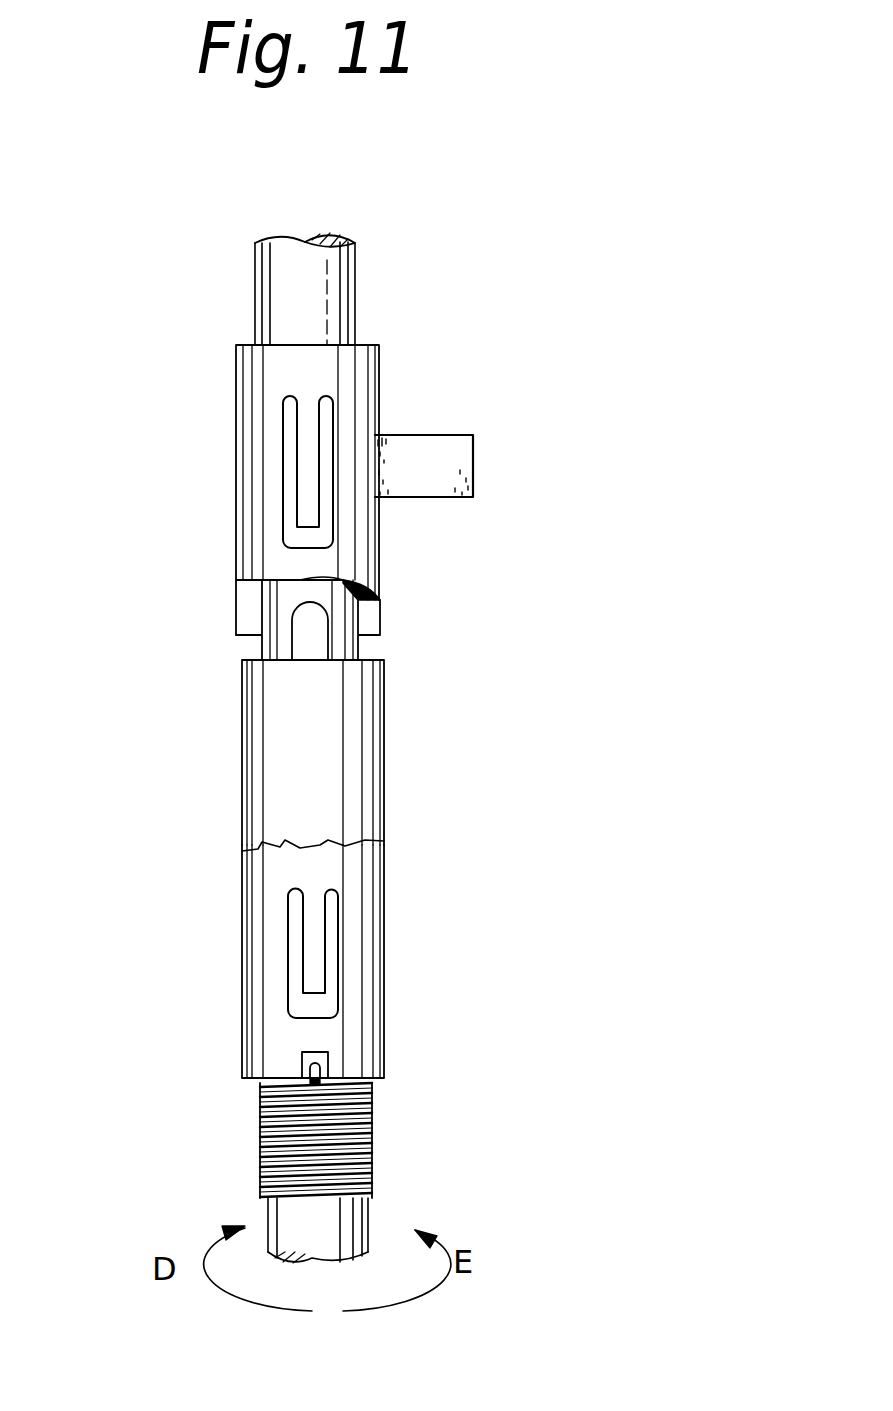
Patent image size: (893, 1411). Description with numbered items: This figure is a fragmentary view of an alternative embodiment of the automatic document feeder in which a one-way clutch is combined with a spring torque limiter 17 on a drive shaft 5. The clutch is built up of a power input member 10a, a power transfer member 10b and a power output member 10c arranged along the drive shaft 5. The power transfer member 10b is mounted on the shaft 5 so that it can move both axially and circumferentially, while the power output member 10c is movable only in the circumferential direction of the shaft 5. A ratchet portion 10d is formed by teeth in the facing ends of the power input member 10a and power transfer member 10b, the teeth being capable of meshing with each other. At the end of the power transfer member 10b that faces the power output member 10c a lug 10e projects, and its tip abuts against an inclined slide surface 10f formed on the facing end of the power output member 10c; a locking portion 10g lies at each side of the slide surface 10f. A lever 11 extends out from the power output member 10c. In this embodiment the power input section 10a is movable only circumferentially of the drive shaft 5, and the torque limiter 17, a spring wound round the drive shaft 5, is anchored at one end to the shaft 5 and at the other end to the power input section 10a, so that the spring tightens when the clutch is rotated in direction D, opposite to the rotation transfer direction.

The drive shaft 5 is at (345, 287).
The power input member 10a is at (252, 967).
The power transfer member 10b is at (243, 778).
The power output member 10c is at (257, 410).
The ratchet portion 10d is at (387, 843).
The lug 10e is at (307, 653).
The slide surface 10f is at (322, 580).
The locking portion 10g is at (247, 613).
The lever 11 is at (473, 462).
The torque limiter 17 is at (377, 1113).